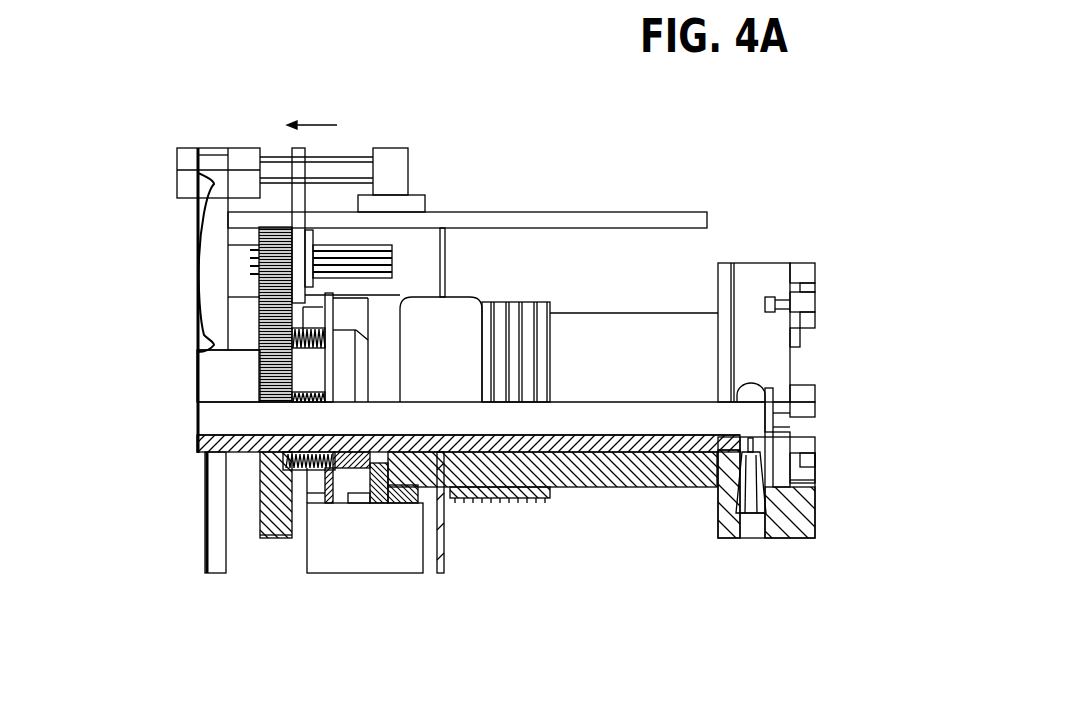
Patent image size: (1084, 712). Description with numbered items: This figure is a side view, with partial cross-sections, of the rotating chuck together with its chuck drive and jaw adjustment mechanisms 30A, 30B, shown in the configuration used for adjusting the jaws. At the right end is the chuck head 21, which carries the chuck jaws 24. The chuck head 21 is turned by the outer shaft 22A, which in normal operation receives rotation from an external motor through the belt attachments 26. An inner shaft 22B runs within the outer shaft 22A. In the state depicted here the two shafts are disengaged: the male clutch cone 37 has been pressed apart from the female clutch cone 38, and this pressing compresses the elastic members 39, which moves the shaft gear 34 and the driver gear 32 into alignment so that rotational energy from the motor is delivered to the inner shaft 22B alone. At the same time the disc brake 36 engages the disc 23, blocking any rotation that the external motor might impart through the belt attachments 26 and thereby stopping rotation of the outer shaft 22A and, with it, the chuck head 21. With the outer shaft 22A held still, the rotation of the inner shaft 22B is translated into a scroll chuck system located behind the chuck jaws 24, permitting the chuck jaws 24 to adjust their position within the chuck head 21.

The chuck head 21 is at (742, 297).
The outer shaft 22A is at (573, 468).
The inner shaft 22B is at (668, 440).
The disc 23 is at (441, 262).
The chuck jaws 24 is at (800, 298).
The belt attachments 26 is at (527, 345).
The chuck drive mechanism 30A is at (843, 530).
The jaw adjustment mechanism 30B is at (155, 517).
The driver gear 32 is at (273, 268).
The shaft gear 34 is at (282, 387).
The disc brake 36 is at (470, 711).
The male clutch cone 37 is at (360, 463).
The female clutch cone 38 is at (398, 500).
The elastic members 39 is at (320, 396).